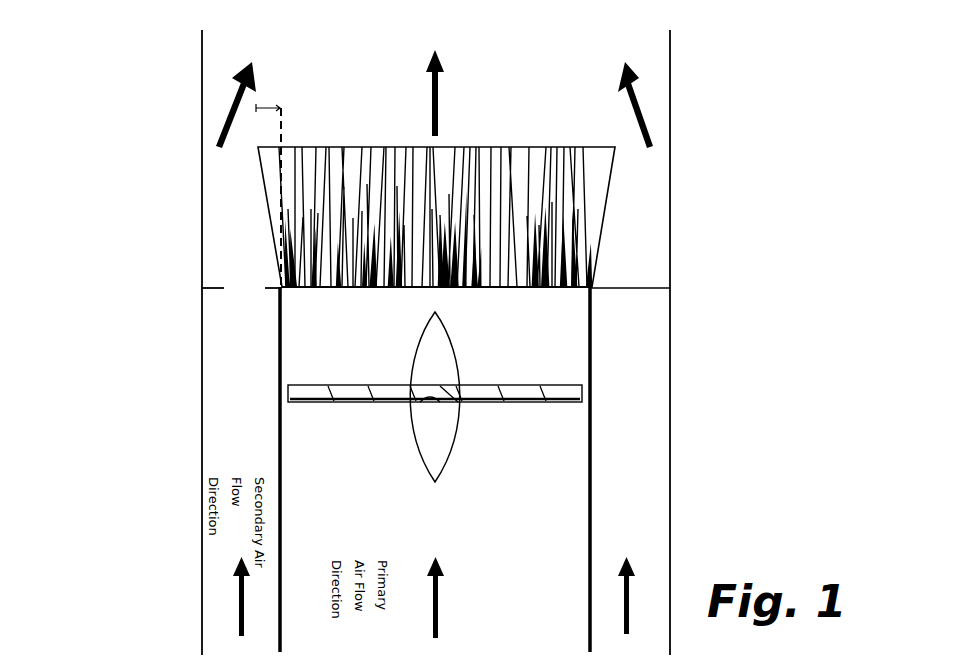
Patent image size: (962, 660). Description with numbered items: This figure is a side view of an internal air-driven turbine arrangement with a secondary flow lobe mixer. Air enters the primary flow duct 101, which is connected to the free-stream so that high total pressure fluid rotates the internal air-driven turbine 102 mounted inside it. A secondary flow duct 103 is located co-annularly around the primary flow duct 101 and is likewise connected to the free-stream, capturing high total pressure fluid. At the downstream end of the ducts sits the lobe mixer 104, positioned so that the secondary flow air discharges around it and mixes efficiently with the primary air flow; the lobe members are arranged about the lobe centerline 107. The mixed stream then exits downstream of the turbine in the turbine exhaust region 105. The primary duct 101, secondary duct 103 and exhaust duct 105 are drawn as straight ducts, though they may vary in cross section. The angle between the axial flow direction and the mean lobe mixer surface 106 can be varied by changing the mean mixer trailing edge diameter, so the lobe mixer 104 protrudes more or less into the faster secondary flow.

The primary flow duct 101 is at (320, 488).
The internal air-driven turbine 102 is at (545, 405).
The secondary flow duct 103 is at (237, 358).
The lobe mixer 104 is at (545, 150).
The turbine exhaust region 105 is at (237, 32).
The mean lobe mixer surface 106 is at (262, 117).
The lobe centerline 107 is at (543, 287).